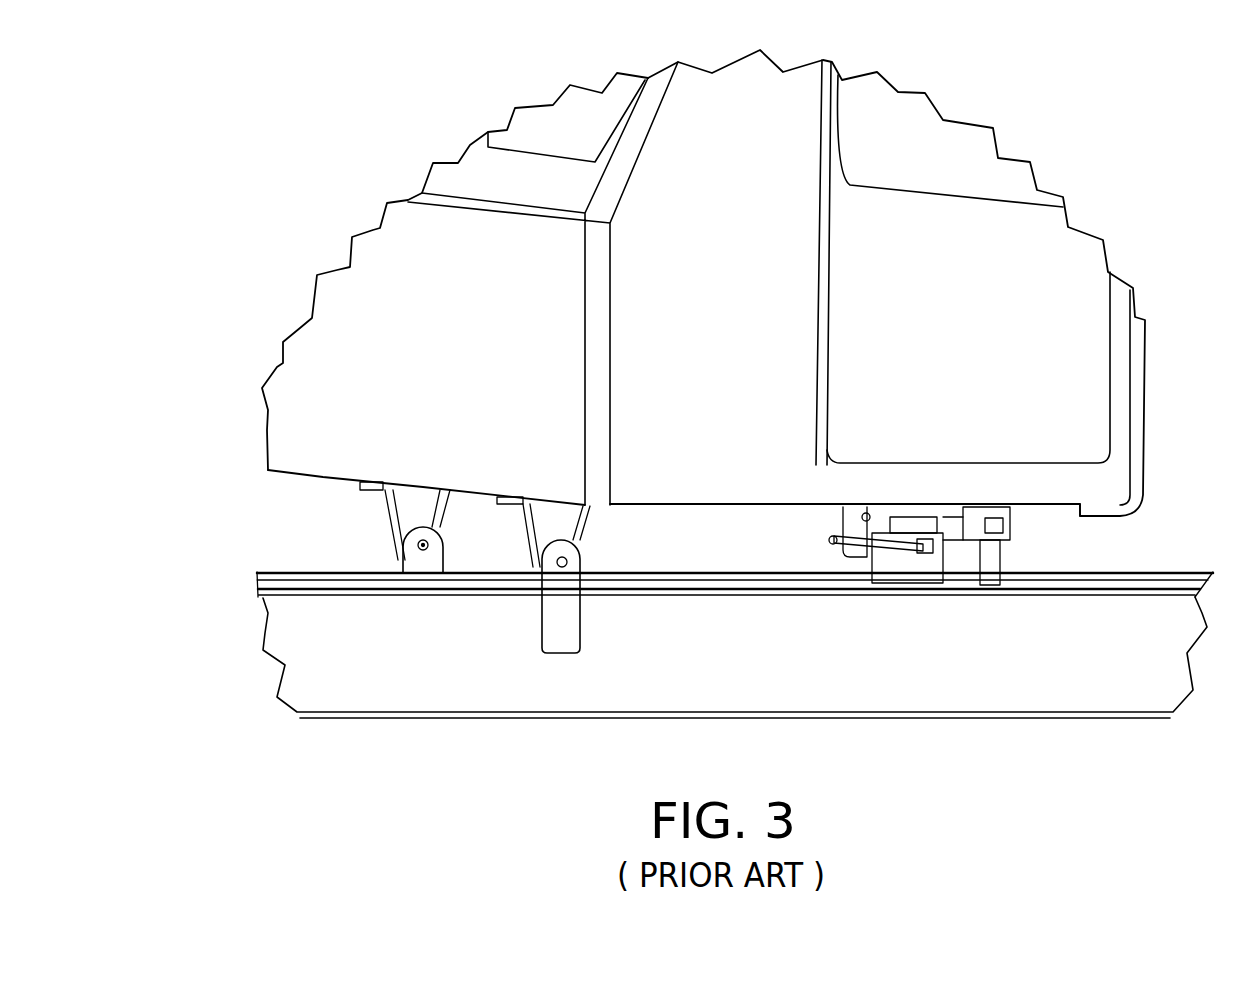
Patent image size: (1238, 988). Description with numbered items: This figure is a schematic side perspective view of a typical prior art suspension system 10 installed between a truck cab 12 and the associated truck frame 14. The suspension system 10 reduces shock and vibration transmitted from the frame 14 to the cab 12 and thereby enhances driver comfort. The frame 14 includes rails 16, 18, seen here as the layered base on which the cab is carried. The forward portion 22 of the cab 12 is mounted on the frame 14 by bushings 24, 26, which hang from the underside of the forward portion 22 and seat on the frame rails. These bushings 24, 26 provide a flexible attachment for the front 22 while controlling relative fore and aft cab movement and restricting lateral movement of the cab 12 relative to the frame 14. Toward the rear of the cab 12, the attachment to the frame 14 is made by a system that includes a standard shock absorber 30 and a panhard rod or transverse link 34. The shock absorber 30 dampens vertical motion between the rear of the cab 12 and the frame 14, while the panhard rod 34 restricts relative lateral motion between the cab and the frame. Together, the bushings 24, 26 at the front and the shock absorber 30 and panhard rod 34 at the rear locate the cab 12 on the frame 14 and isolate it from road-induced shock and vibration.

The suspension system 10 is at (267, 495).
The truck cab 12 is at (705, 338).
The truck frame 14 is at (487, 730).
The rail 16 is at (705, 668).
The rail 18 is at (278, 633).
The forward portion of the cab 22 is at (440, 433).
The bushing 24 is at (570, 548).
The bushing 26 is at (432, 537).
The shock absorber 30 is at (1003, 548).
The panhard rod 34 is at (887, 513).